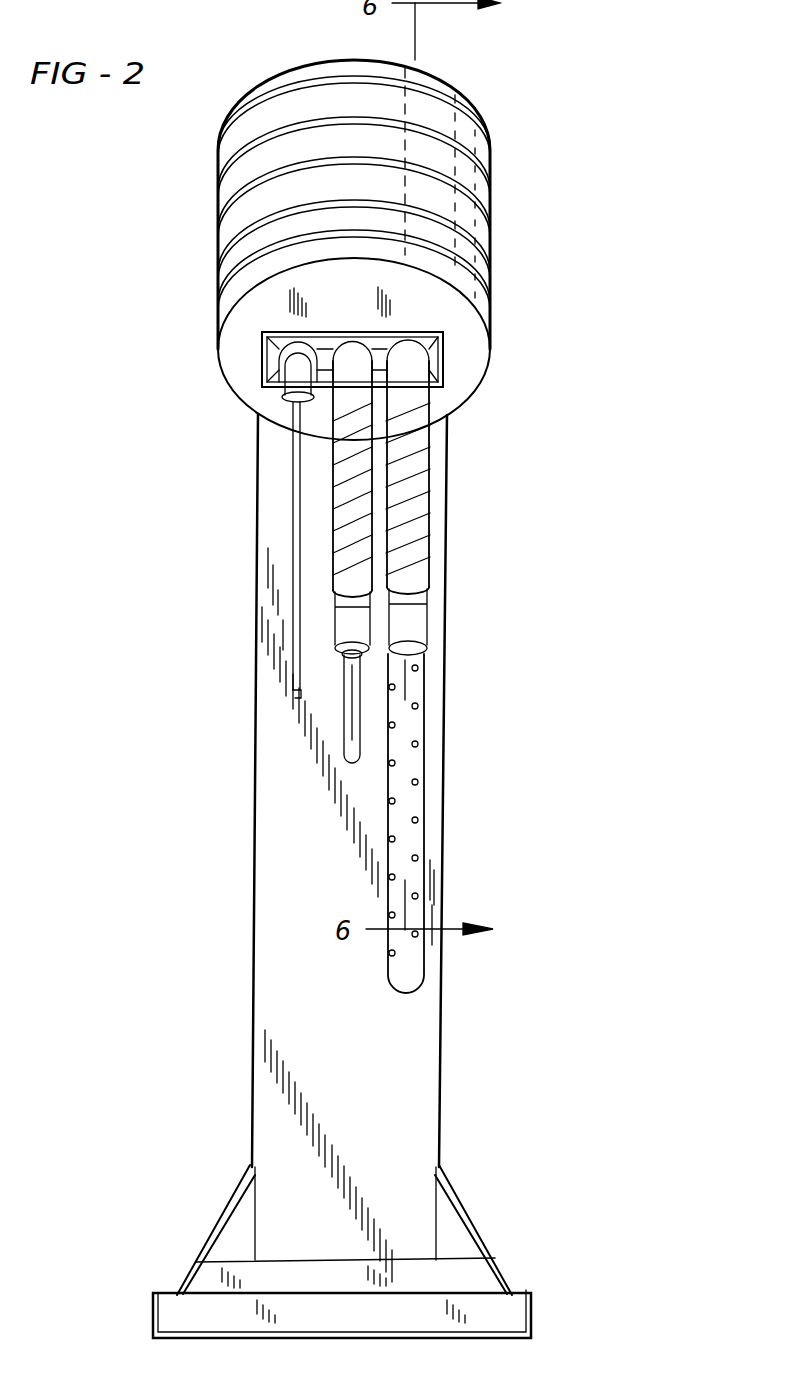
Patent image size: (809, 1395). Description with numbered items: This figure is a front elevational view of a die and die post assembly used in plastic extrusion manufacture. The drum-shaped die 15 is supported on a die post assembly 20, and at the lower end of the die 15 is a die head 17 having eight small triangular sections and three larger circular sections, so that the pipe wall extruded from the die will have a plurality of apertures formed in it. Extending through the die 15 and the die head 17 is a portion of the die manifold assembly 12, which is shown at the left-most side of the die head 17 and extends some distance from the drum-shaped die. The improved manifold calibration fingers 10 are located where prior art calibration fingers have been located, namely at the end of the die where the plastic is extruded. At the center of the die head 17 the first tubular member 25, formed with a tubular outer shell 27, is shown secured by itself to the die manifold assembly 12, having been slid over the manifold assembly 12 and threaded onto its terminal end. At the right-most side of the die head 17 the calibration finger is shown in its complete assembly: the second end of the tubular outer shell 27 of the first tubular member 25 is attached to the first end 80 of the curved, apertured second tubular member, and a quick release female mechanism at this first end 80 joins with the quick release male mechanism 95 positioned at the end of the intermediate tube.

The manifold calibration fingers 10 is at (446, 580).
The die manifold assembly 12 is at (283, 398).
The die 15 is at (490, 167).
The die head 17 is at (385, 336).
The die post assembly 20 is at (452, 958).
The first tubular member 25 is at (400, 458).
The tubular outer shell 27 is at (340, 562).
The first end 80 is at (430, 672).
The quick release male mechanism 95 is at (332, 657).